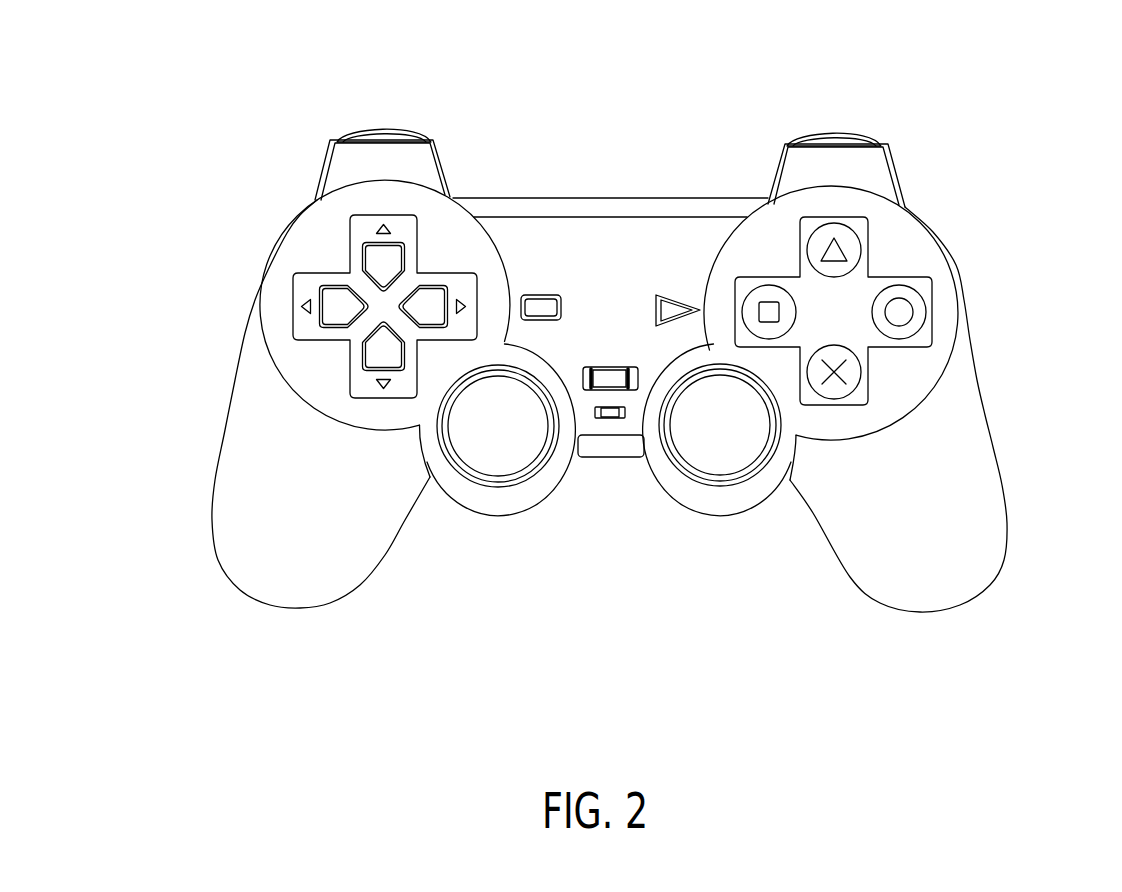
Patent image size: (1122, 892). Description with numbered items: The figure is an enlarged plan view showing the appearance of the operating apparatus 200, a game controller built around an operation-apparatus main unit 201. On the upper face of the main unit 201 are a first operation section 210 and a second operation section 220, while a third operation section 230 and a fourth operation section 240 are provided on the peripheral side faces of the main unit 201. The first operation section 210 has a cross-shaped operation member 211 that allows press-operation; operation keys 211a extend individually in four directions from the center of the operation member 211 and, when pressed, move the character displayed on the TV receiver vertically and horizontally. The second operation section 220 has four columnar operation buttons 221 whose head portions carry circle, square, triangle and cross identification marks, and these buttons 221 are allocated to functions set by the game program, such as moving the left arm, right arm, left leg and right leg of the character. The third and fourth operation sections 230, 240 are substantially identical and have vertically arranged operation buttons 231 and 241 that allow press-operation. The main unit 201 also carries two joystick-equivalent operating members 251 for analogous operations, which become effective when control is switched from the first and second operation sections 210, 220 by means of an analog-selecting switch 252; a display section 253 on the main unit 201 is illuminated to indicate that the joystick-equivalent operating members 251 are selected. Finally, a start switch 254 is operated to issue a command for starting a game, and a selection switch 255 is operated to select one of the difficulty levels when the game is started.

The operating apparatus 200 is at (1037, 135).
The operation-apparatus main unit 201 is at (977, 600).
The first operation section 210 is at (332, 253).
The cross-shaped operation member 211 is at (432, 289).
The operation keys 211a is at (397, 253).
The second operation section 220 is at (886, 255).
The operation buttons 221 is at (817, 237).
The third operation section 230 is at (318, 117).
The operation buttons 231 is at (380, 124).
The fourth operation section 240 is at (864, 122).
The operation buttons 241 is at (810, 128).
The joystick-equivalent operating members 251 is at (503, 452).
The analog-selecting switch 252 is at (602, 380).
The display section 253 is at (615, 418).
The start switch 254 is at (672, 293).
The selection switch 255 is at (553, 312).